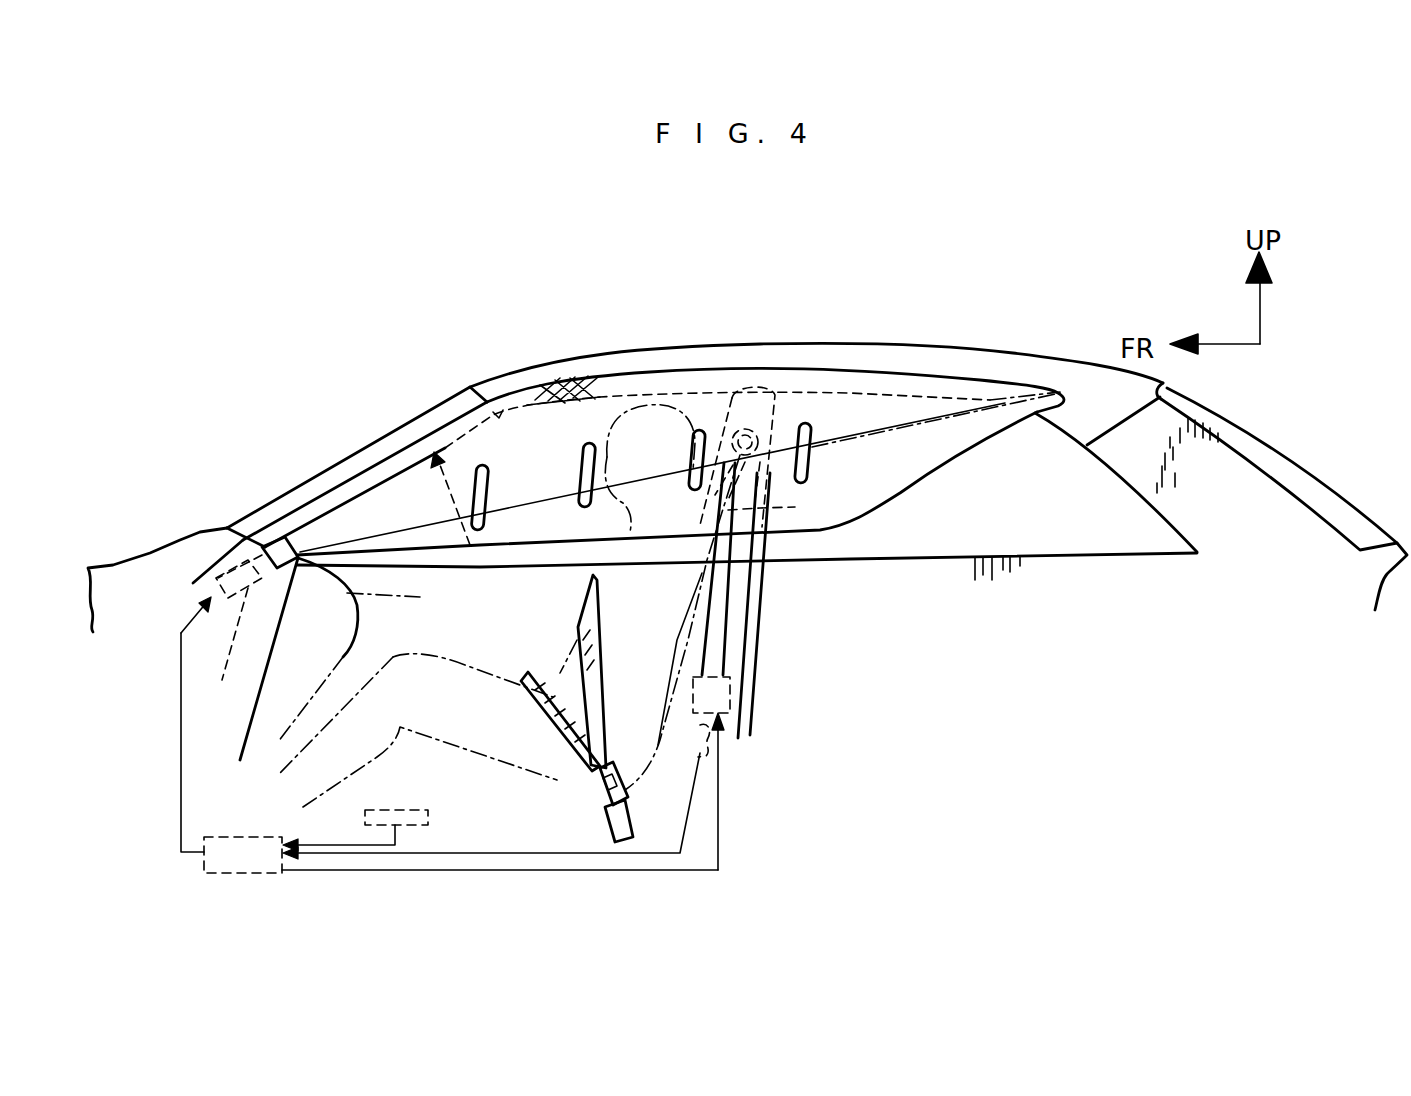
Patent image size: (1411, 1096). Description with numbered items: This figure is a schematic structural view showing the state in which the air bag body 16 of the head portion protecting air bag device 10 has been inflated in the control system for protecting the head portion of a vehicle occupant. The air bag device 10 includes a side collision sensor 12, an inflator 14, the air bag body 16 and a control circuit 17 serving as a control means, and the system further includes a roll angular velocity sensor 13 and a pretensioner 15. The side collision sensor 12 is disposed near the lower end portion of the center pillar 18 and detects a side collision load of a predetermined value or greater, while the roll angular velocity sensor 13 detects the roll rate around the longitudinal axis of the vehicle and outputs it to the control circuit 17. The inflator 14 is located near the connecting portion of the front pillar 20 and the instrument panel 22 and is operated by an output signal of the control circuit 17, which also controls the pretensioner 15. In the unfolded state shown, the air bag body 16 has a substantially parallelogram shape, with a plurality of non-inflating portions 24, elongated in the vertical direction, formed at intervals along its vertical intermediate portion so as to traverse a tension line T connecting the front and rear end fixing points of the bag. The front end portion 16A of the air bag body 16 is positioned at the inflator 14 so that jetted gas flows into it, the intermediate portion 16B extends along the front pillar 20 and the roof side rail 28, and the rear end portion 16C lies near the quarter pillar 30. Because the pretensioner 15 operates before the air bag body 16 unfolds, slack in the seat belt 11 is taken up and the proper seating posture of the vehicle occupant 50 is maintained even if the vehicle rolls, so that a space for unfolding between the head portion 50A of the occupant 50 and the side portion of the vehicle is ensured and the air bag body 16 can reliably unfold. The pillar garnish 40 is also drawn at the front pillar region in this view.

The head portion protecting air bag device 10 is at (867, 350).
The roof side rail 28 is at (797, 357).
The air bag body 16 is at (650, 366).
The front end portion of the air bag body 16A is at (314, 508).
The intermediate portion of the air bag body 16B is at (655, 490).
The rear end portion of the air bag body 16C is at (1027, 388).
The front pillar garnish 40 is at (392, 445).
The non-inflating portions 24 is at (578, 477).
The vehicle occupant 50 is at (655, 515).
The head portion of the vehicle occupant 50A is at (690, 410).
The seat belt 11 is at (765, 508).
The tension line T is at (910, 428).
The quarter pillar 30 is at (1100, 466).
The front pillar 20 is at (470, 545).
The instrument panel 22 is at (417, 700).
The center pillar 18 is at (778, 546).
The inflator 14 is at (221, 706).
The pretensioner 15 is at (735, 694).
The side collision sensor 12 is at (712, 750).
The roll angular velocity sensor 13 is at (410, 810).
The control circuit 17 is at (233, 874).